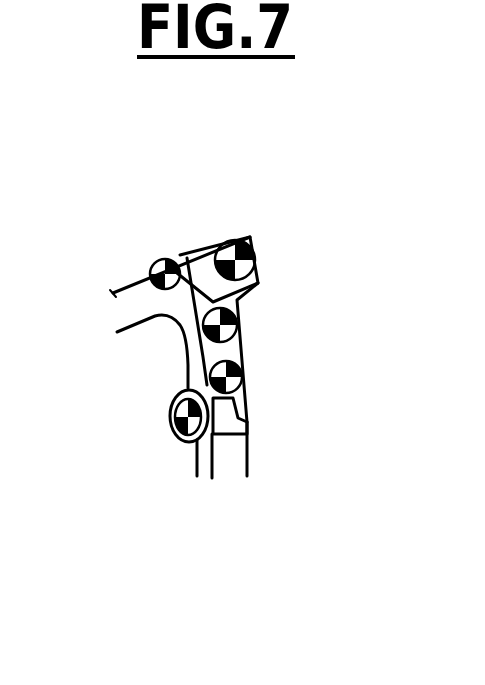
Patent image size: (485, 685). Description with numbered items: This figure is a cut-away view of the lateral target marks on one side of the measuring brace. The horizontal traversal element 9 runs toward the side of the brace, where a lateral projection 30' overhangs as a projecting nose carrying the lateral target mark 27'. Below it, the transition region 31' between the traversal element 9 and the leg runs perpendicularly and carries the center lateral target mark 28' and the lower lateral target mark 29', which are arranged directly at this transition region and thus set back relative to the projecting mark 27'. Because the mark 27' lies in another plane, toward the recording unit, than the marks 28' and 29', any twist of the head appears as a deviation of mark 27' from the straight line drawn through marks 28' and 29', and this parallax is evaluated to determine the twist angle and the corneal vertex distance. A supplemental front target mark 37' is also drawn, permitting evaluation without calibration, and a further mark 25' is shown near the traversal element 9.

The traversal element 9 is at (127, 297).
The pivot 25' is at (176, 220).
The lateral target mark 27' is at (306, 253).
The center lateral target mark 28' is at (292, 319).
The lower lateral target mark 29' is at (300, 370).
The lateral projection 30' is at (238, 214).
The transition region 31' is at (149, 368).
The supplemental front target mark 37' is at (122, 431).